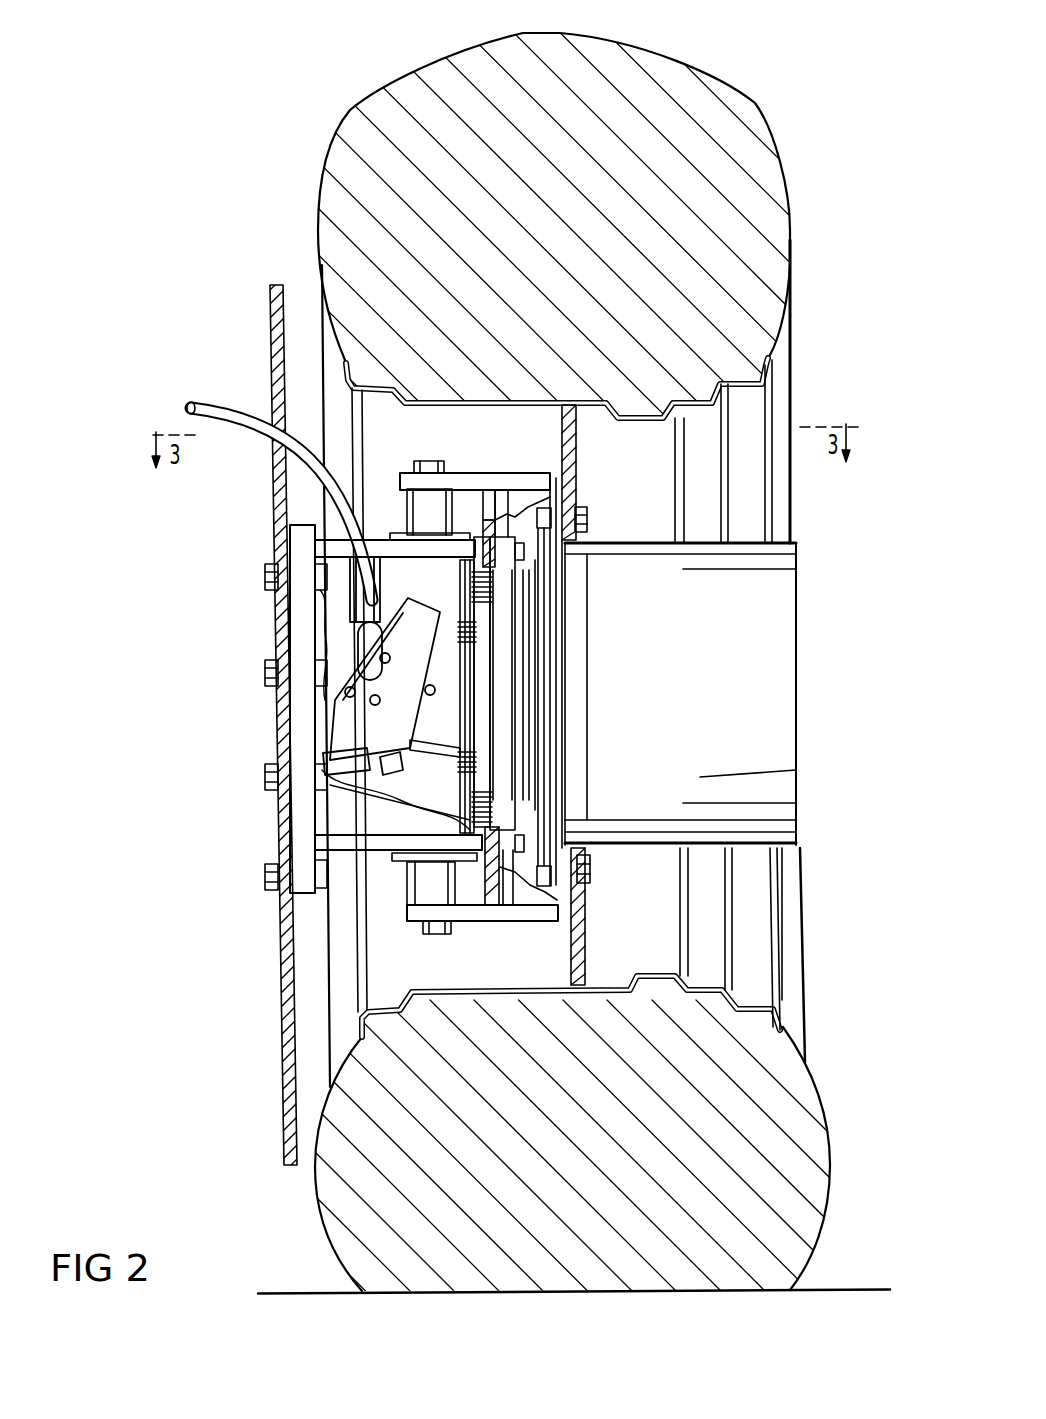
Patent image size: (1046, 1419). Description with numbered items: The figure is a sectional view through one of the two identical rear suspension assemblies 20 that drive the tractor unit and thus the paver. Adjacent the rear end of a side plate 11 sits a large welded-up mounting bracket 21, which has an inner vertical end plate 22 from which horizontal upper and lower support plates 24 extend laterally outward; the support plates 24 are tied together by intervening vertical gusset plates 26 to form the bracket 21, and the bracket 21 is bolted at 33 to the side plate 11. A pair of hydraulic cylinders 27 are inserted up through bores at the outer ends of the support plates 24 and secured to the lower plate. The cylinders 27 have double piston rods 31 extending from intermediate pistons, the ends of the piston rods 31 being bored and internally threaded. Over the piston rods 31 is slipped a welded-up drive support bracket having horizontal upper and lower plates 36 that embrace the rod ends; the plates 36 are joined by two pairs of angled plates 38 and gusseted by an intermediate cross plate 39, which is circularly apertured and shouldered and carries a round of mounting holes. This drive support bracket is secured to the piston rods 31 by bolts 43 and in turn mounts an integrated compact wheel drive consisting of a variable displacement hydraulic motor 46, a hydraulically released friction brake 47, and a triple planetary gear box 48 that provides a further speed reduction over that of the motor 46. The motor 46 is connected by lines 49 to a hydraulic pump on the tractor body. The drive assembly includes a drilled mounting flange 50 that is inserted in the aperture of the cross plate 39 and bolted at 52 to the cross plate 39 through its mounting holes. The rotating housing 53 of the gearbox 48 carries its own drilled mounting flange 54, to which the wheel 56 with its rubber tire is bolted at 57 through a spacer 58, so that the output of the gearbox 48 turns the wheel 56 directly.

The side plate 11 is at (285, 990).
The rear suspension assembly 20 is at (842, 620).
The mounting bracket 21 is at (339, 716).
The inner vertical end plate 22 is at (298, 727).
The horizontal upper and lower support plates 24 is at (442, 553).
The vertical gusset plates 26 is at (340, 626).
The hydraulic cylinders 27 is at (402, 816).
The double piston rods 31 is at (415, 512).
The bolts 33 is at (265, 678).
The horizontal upper and lower plates 36 is at (533, 477).
The angled plates 38 is at (505, 500).
The intermediate cross plate 39 is at (489, 497).
The bolts 43 is at (433, 462).
The variable displacement hydraulic motor 46 is at (440, 748).
The hydraulically released friction brake 47 is at (490, 748).
The triple planetary gear box 48 is at (718, 713).
The lines 49 is at (257, 435).
The mounting flange 50 is at (507, 666).
The bolts 52 is at (524, 550).
The rotating housing 53 is at (798, 769).
The mounting flange 54 is at (553, 693).
The wheel 56 is at (770, 380).
The bolts 57 is at (588, 518).
The spacer 58 is at (562, 606).